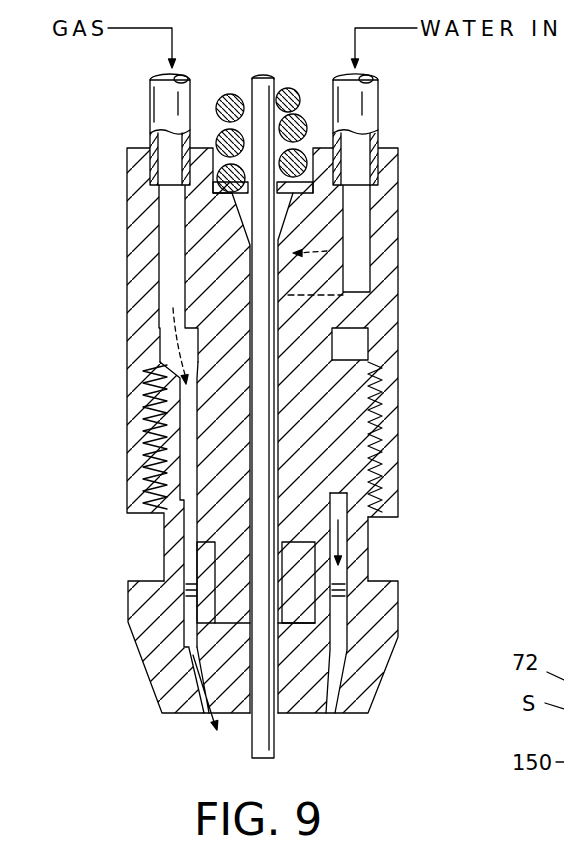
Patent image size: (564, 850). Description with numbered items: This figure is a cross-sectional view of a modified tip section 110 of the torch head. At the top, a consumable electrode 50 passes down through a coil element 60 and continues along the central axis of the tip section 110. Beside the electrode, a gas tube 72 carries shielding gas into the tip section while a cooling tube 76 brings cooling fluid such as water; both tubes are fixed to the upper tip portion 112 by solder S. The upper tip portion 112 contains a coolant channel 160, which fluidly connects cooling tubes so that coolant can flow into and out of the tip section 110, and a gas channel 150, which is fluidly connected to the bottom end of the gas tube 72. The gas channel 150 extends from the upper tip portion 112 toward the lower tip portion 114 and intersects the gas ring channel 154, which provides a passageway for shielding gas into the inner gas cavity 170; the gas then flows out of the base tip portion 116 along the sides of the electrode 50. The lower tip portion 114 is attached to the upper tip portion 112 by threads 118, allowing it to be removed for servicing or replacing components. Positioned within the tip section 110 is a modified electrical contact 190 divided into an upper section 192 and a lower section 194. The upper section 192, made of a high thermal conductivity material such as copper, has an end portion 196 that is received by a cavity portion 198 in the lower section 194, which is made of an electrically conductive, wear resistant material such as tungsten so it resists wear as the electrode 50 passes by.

The electrode 50 is at (262, 90).
The coil element 60 is at (228, 96).
The gas tube 72 is at (150, 105).
The cooling tube 76 is at (378, 105).
The solder S is at (150, 150).
The tip section 110 is at (405, 288).
The upper tip portion 112 is at (402, 312).
The lower tip portion 114 is at (148, 643).
The base tip portion 116 is at (208, 712).
The threads 118 is at (155, 473).
The gas channel 150 is at (172, 247).
The gas ring channel 154 is at (358, 343).
The coolant channel 160 is at (362, 247).
The inner gas cavity 170 is at (183, 449).
The electrical contact 190 is at (317, 473).
The upper section 192 is at (322, 413).
The lower section 194 is at (308, 663).
The end portion 196 is at (297, 593).
The cavity portion 198 is at (200, 593).